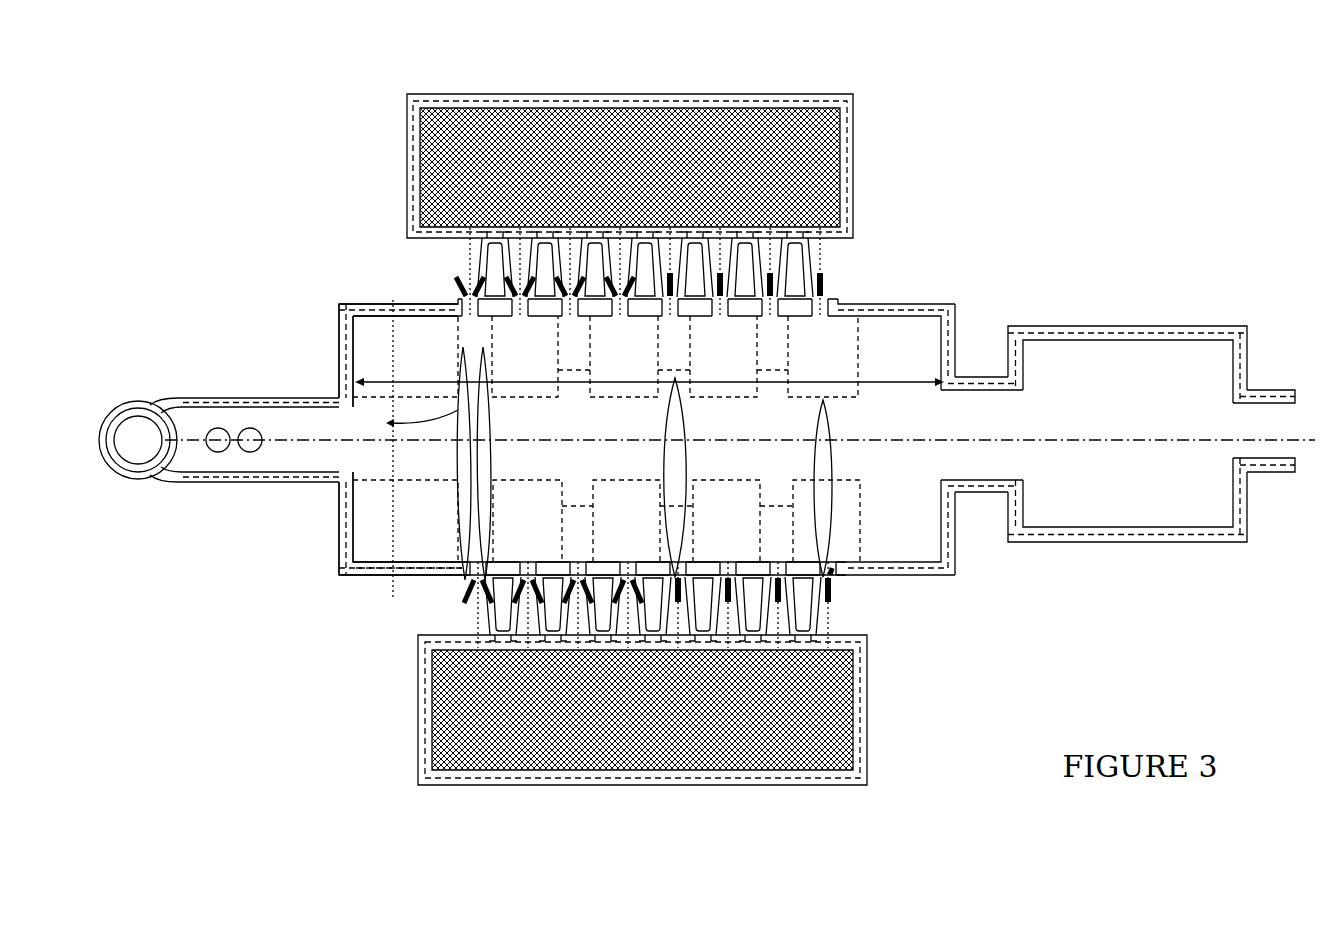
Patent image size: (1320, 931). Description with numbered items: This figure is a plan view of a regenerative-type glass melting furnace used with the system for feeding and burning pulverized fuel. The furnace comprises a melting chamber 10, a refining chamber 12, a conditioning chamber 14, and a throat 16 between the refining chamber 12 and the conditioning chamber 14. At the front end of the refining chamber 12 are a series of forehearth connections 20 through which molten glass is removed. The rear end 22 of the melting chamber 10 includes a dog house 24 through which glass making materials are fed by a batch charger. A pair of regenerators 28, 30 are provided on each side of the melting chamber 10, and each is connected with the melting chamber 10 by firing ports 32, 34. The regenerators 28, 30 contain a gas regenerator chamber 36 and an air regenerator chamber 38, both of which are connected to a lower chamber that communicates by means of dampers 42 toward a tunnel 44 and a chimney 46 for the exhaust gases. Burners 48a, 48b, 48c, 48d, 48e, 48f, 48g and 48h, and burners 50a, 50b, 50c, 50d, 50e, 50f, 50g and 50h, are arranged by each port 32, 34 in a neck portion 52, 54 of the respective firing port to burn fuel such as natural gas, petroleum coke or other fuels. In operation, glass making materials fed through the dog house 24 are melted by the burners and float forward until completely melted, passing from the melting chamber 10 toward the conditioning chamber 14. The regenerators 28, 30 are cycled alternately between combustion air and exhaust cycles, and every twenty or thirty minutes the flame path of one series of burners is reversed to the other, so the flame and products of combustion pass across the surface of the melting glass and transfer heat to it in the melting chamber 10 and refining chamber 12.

The melting chamber 10 is at (367, 553).
The refining chamber 12 is at (928, 538).
The conditioning chamber 14 is at (1112, 492).
The throat 16 is at (988, 440).
The forehearth connections 20 is at (1254, 392).
The rear end 22 is at (345, 510).
The dog house 24 is at (360, 333).
The regenerator 28 is at (853, 97).
The regenerator 30 is at (867, 715).
The firing port 32 is at (823, 240).
The firing port 34 is at (478, 633).
The gas regenerator chamber 36 is at (848, 173).
The air regenerator chamber 38 is at (770, 157).
The dampers 42 is at (820, 382).
The tunnel 44 is at (252, 425).
The chimney 46 is at (140, 458).
The burner 48a is at (453, 281).
The burner 48b is at (515, 290).
The burner 48c is at (578, 298).
The burner 48d is at (622, 297).
The burner 48e is at (672, 288).
The burner 48f is at (722, 290).
The burner 48g is at (772, 292).
The burner 48h is at (825, 283).
The burner 50a is at (475, 582).
The burner 50b is at (524, 580).
The burner 50c is at (584, 578).
The burner 50d is at (634, 578).
The burner 50e is at (682, 578).
The burner 50f is at (728, 577).
The burner 50g is at (782, 578).
The burner 50h is at (828, 585).
The neck portion 52 is at (475, 308).
The neck portion 54 is at (832, 568).